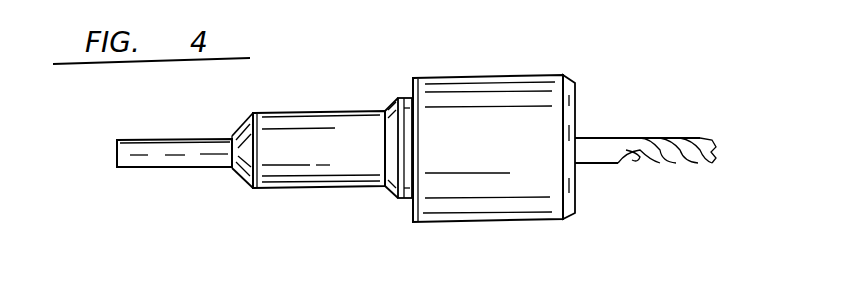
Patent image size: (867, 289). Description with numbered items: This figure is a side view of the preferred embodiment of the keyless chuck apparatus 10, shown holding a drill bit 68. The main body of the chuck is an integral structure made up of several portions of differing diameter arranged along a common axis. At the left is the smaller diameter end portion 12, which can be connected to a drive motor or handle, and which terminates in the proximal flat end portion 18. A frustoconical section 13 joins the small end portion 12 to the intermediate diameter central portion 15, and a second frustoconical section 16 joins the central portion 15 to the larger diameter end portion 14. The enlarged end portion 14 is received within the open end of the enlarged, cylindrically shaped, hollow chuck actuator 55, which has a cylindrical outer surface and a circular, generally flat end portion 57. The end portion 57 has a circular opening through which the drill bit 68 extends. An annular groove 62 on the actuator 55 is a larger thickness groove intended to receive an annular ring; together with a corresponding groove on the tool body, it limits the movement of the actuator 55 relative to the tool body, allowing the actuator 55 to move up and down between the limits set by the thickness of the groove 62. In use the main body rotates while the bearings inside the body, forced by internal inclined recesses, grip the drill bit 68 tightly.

The keyless chuck apparatus 10 is at (596, 78).
The smaller diameter end portion 12 is at (183, 171).
The frustoconical section 13 is at (235, 136).
The larger diameter end portion 14 is at (403, 98).
The intermediate diameter central portion 15 is at (319, 149).
The frustoconical section 16 is at (385, 108).
The proximal flat end portion 18 is at (117, 148).
The chuck actuator 55 is at (497, 153).
The circular generally flat end portion 57 is at (573, 194).
The annular groove 62 is at (411, 205).
The drill bit 68 is at (597, 150).